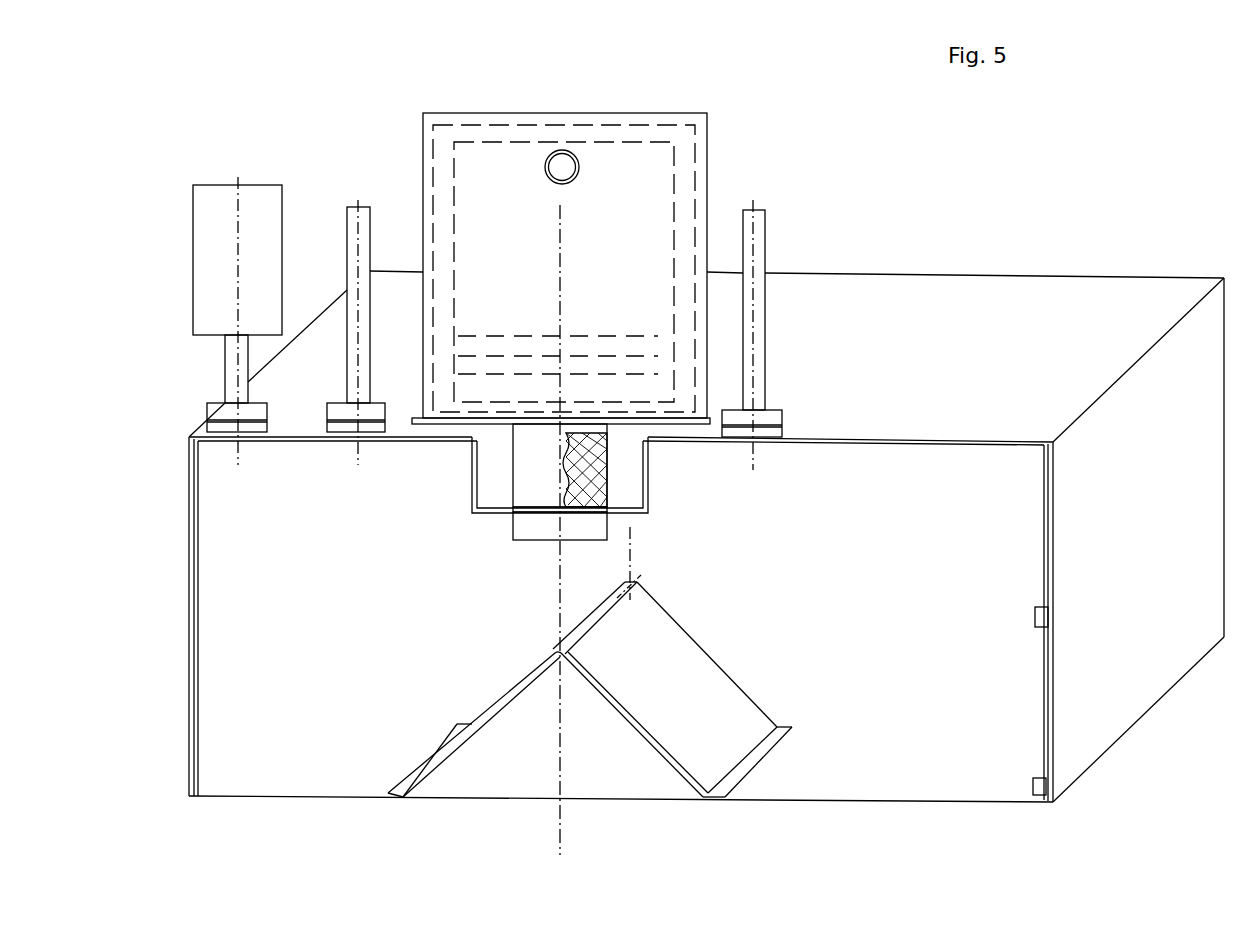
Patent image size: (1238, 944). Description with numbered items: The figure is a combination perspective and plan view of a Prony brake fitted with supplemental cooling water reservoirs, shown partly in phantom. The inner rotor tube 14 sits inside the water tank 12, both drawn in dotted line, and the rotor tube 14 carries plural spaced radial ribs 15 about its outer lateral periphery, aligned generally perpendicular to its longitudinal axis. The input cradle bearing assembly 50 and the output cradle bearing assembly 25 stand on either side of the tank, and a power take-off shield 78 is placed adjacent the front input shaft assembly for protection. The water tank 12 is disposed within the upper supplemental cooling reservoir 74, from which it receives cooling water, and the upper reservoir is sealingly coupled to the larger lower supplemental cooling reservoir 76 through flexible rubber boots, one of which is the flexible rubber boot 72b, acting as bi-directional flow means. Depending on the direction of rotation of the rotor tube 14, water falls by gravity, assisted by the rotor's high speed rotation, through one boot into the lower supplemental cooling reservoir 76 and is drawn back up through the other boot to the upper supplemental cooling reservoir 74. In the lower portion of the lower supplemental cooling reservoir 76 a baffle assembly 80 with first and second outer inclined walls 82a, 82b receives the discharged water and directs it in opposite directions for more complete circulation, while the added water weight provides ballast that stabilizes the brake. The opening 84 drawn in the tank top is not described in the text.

The water tank 12 is at (638, 125).
The inner rotor tube 14 is at (455, 163).
The radial ribs 15 is at (597, 373).
The output cradle bearing assembly 25 is at (750, 218).
The input cradle bearing assembly 50 is at (360, 202).
The flexible rubber boot 72b is at (521, 533).
The upper supplemental cooling reservoir 74 is at (432, 113).
The lower supplemental cooling reservoir 76 is at (332, 486).
The power take-off shield 78 is at (232, 219).
The baffle assembly 80 is at (698, 643).
The first outer inclined wall 82a is at (517, 682).
The second outer inclined wall 82b is at (715, 707).
The port opening 84 is at (561, 163).